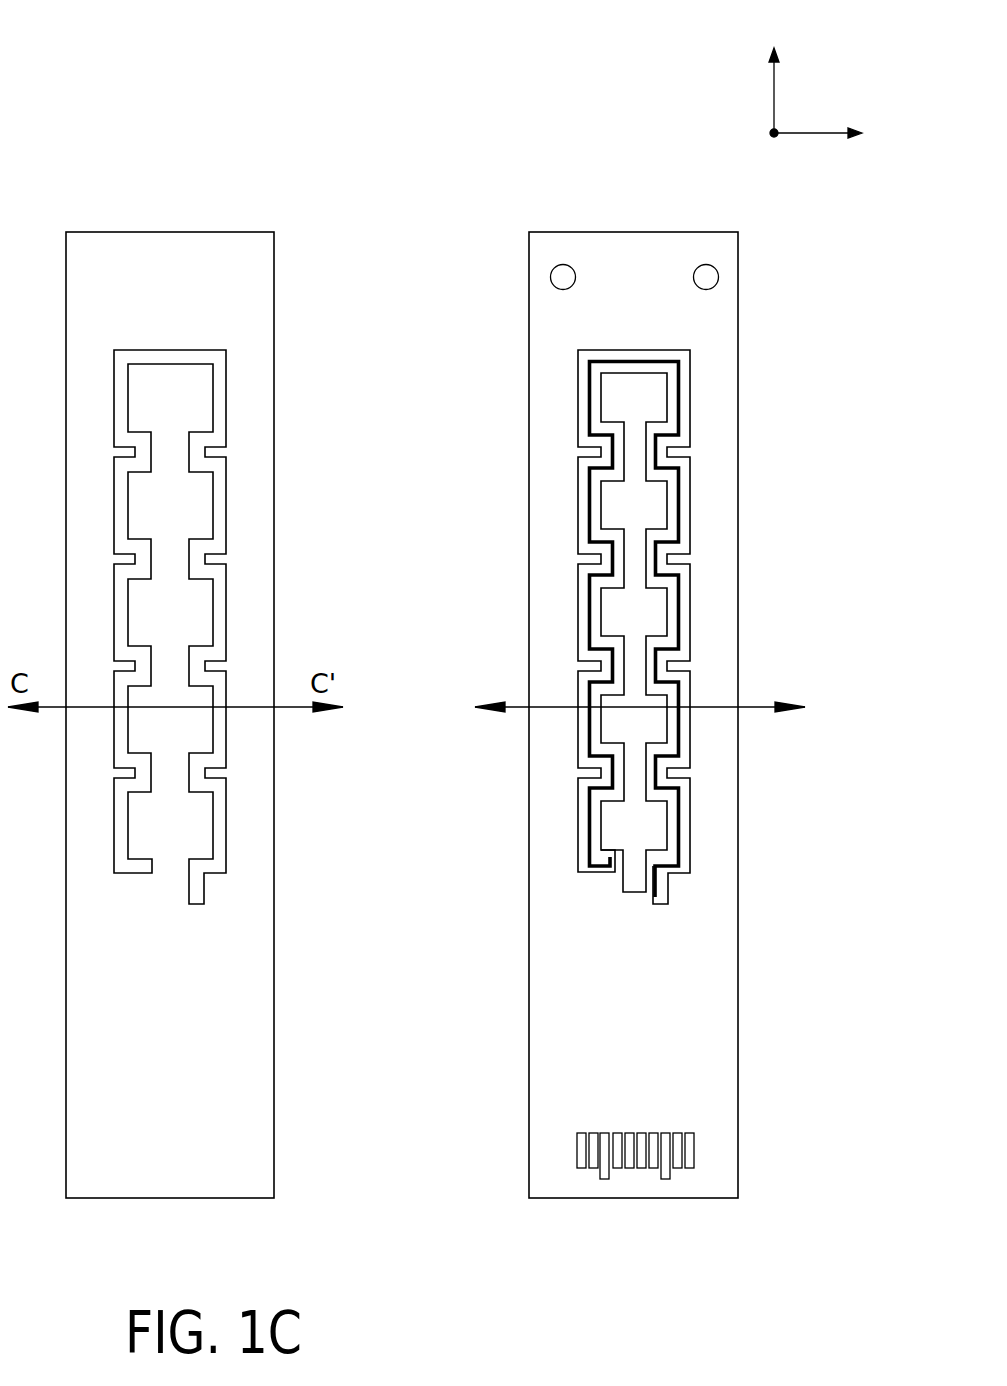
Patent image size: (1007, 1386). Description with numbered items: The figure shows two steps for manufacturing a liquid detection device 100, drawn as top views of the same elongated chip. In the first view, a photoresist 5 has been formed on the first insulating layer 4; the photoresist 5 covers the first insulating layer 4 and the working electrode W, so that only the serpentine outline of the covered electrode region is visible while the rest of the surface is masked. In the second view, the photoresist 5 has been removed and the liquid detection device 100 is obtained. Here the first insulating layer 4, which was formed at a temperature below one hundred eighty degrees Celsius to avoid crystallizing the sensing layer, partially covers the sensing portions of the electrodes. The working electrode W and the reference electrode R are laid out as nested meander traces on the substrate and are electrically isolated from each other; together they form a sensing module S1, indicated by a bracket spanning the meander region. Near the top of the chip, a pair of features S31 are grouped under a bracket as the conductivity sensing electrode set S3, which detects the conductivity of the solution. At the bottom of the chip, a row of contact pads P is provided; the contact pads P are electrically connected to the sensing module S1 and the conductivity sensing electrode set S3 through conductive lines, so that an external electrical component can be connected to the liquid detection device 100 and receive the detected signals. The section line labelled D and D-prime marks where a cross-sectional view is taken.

In FIG. 1D, the liquid detection device 100 is at (490, 156).
In FIG. 1D, the first insulating layer 4 is at (720, 1022).
In FIG. 1C, the photoresist 5 is at (258, 1022).
In FIG. 1C, the reference electrode R is at (218, 397).
In FIG. 1D, the reference electrode R is at (790, 527).
In FIG. 1D, the working electrode W is at (653, 503).
In FIG. 1D, the sensing module S1 is at (711, 627).
In FIG. 1D, the conductivity sensing electrode set S3 is at (632, 211).
In FIG. 1D, the fixing hole S31 is at (737, 184).
In FIG. 1D, the contact pads P is at (665, 1179).